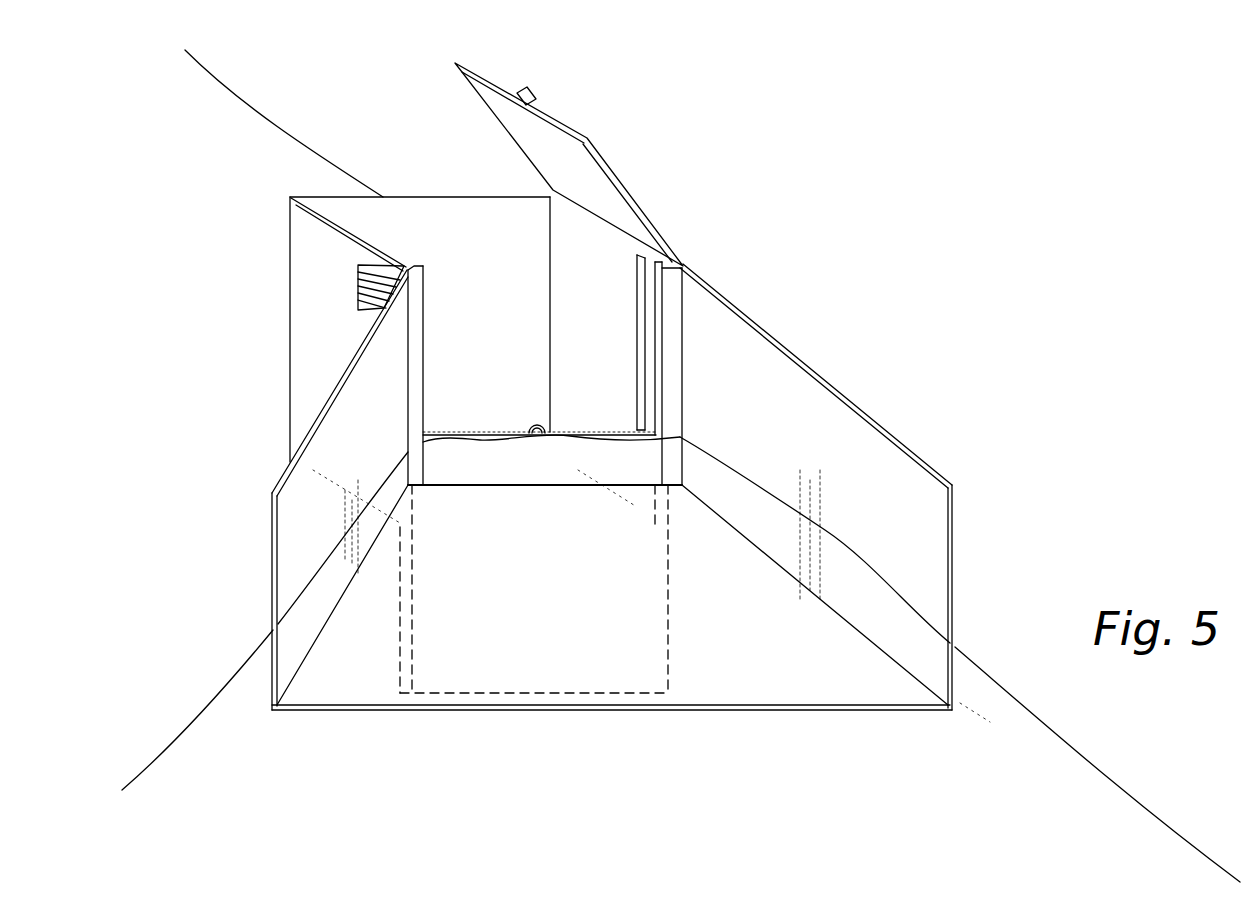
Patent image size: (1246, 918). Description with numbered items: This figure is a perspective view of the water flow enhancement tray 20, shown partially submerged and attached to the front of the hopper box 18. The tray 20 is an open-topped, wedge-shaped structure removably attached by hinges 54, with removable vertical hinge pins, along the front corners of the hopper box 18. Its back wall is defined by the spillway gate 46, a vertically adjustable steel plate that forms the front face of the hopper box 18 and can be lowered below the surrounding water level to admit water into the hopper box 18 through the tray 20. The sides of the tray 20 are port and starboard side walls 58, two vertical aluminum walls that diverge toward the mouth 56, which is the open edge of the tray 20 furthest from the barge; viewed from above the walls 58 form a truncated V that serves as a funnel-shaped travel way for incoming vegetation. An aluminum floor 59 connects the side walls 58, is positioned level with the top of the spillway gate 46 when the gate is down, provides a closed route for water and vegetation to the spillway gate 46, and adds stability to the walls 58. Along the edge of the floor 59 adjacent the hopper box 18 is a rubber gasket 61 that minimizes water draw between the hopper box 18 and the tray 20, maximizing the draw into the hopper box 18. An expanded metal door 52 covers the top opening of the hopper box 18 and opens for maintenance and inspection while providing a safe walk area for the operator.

The hopper box 18 is at (305, 276).
The water flow enhancement tray 20 is at (553, 482).
The spillway gate 46 is at (668, 600).
The expanded metal door 52 is at (557, 120).
The hinge 54 is at (360, 285).
The mouth 56 is at (600, 732).
The side wall 58 is at (287, 467).
The floor 59 is at (712, 685).
The rubber gasket 61 is at (521, 486).